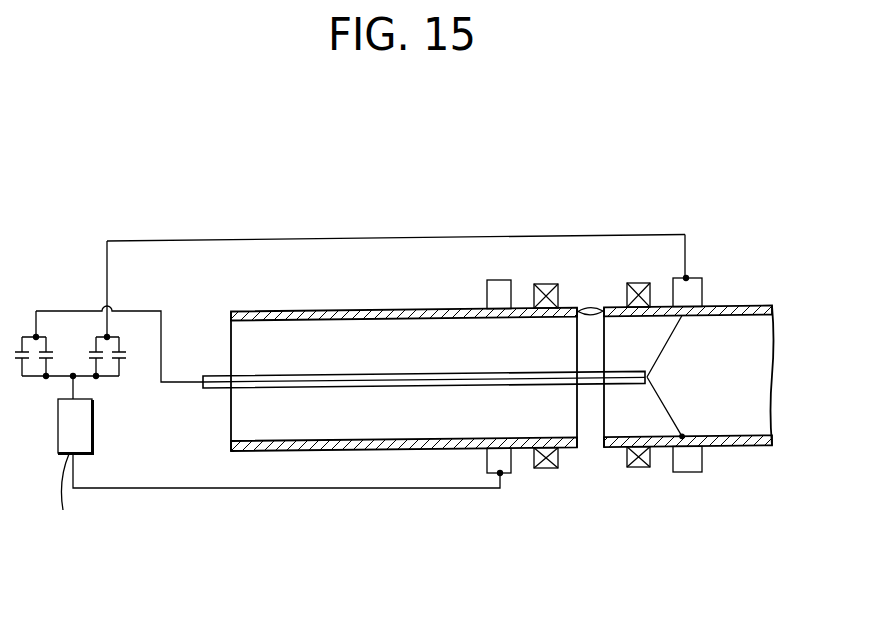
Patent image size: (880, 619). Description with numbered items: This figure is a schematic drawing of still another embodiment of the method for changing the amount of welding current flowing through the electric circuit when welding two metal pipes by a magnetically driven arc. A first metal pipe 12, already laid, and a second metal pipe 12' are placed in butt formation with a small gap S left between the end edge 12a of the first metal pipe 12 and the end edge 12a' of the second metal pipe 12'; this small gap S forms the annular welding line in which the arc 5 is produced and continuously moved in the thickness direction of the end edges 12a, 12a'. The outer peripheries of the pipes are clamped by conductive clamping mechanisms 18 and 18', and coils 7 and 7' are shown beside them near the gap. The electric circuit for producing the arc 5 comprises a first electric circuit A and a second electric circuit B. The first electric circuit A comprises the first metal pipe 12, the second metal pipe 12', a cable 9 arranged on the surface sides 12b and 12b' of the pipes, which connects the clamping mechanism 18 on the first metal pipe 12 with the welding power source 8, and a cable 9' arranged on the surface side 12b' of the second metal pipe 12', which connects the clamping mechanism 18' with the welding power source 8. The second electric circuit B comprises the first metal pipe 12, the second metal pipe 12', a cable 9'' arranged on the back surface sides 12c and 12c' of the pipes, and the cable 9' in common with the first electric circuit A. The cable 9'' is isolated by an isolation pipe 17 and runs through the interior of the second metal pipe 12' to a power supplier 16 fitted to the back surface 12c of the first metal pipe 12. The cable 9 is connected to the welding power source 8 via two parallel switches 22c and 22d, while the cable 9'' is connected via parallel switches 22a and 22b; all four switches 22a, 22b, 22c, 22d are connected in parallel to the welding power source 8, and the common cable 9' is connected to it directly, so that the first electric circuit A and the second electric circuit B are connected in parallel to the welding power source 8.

The arc 5 is at (589, 305).
The coil 7 is at (638, 351).
The coil 7' is at (546, 352).
The welding power source 8 is at (93, 433).
The cable 9 is at (396, 211).
The cable 9' is at (288, 505).
The cable 9'' is at (340, 372).
The first metal pipe 12 is at (694, 369).
The second metal pipe 12' is at (413, 386).
The end edge 12a is at (615, 411).
The end edge 12a' is at (569, 415).
The surface side 12b is at (700, 279).
The surface side 12b' is at (404, 291).
The back surface 12c is at (747, 376).
The back surface side 12c' is at (271, 382).
The power supplier 16 is at (666, 403).
The isolation pipe 17 is at (401, 389).
The clamping mechanism 18 is at (697, 368).
The clamping mechanism 18' is at (487, 390).
The switch 22a is at (24, 352).
The switch 22b is at (48, 360).
The switch 22c is at (100, 360).
The switch 22d is at (125, 358).
The first electric circuit A is at (304, 232).
The second electric circuit B is at (193, 394).
The small gap S is at (577, 406).